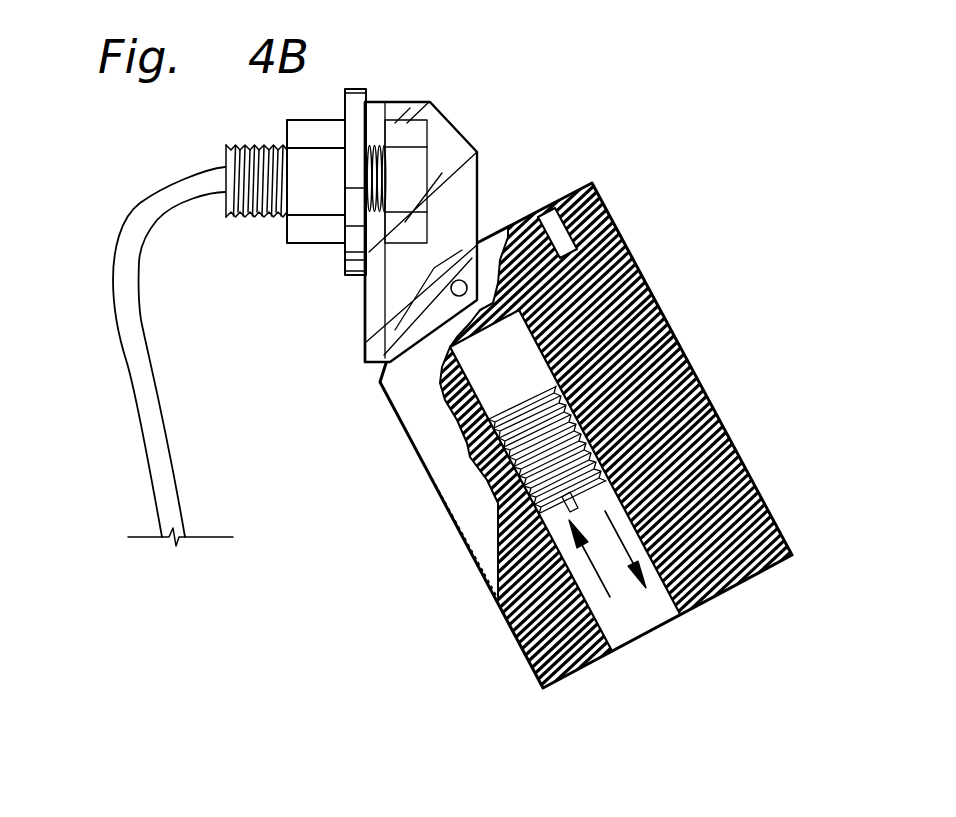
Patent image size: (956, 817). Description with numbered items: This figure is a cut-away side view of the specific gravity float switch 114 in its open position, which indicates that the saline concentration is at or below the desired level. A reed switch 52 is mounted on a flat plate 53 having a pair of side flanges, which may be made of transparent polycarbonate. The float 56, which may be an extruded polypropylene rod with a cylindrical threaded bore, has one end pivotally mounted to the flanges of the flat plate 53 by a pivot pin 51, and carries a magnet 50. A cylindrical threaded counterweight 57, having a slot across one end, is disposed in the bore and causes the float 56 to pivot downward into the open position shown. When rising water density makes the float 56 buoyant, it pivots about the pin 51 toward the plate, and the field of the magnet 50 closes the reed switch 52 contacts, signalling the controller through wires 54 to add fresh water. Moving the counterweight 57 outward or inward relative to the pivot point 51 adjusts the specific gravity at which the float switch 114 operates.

The magnet 50 is at (548, 222).
The pivot pin 51 is at (451, 288).
The reed switch 52 is at (373, 211).
The flat plate 53 is at (363, 333).
The wires 54 is at (132, 350).
The float 56 is at (428, 470).
The counterweight 57 is at (522, 405).
The specific gravity float switch 114 is at (740, 255).